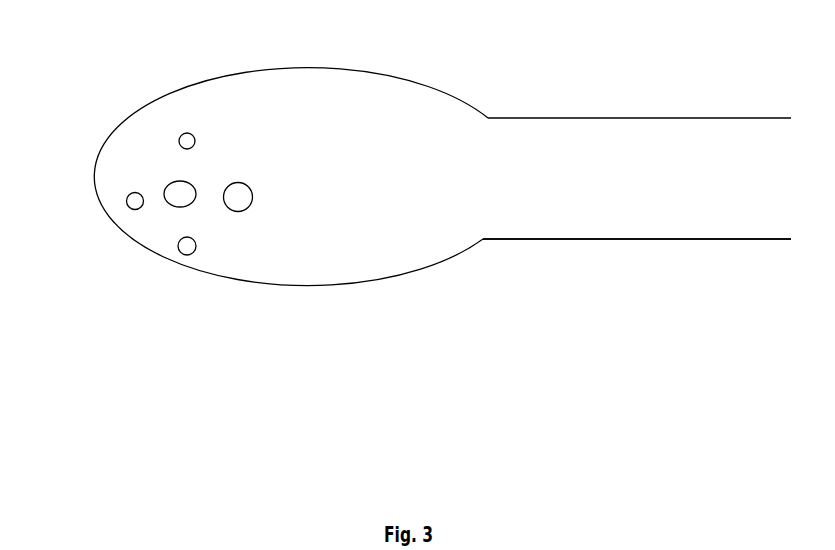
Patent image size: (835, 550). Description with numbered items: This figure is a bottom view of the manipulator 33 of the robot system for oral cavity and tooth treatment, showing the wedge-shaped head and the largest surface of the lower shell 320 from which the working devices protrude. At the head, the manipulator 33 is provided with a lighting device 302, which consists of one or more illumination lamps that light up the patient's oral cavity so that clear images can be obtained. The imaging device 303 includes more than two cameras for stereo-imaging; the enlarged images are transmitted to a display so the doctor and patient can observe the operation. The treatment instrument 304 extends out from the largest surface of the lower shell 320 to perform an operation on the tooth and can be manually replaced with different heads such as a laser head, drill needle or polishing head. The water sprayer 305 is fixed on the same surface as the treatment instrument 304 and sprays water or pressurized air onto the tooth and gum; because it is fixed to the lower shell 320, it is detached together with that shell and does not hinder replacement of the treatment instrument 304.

The manipulator 33 is at (591, 94).
The lighting device 302 is at (133, 209).
The imaging device 303 is at (195, 241).
The treatment instrument 304 is at (178, 207).
The water sprayer 305 is at (238, 211).
The lower shell 320 is at (456, 237).